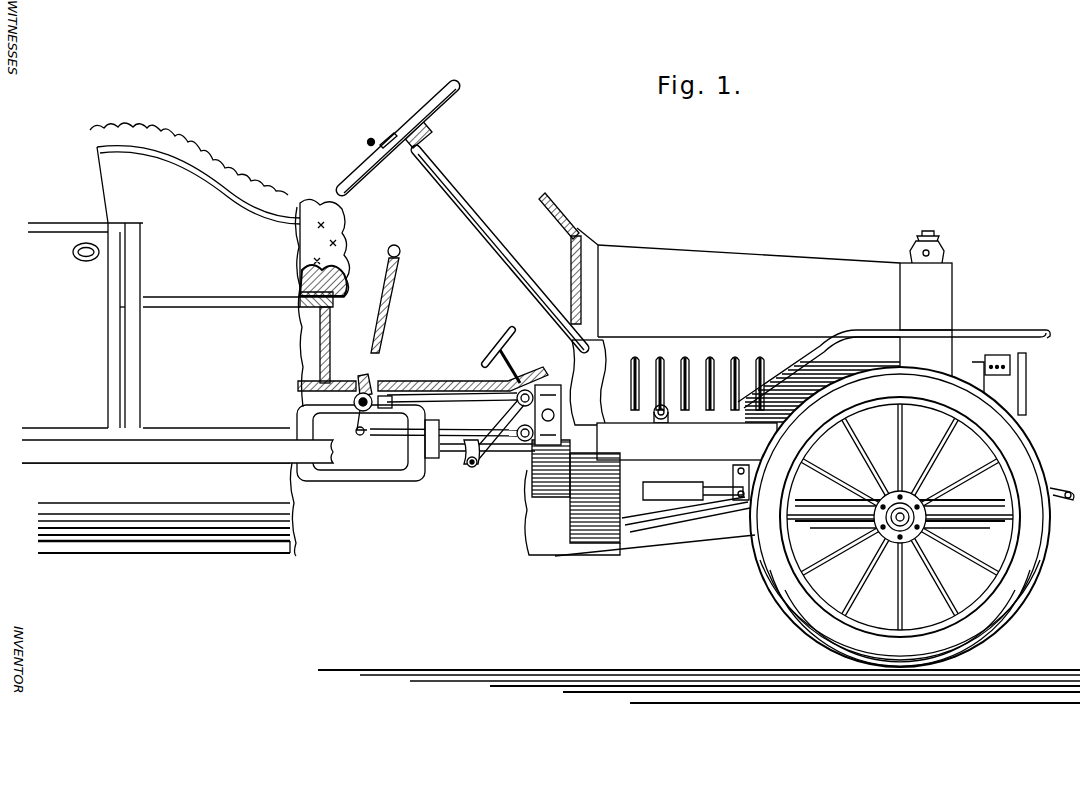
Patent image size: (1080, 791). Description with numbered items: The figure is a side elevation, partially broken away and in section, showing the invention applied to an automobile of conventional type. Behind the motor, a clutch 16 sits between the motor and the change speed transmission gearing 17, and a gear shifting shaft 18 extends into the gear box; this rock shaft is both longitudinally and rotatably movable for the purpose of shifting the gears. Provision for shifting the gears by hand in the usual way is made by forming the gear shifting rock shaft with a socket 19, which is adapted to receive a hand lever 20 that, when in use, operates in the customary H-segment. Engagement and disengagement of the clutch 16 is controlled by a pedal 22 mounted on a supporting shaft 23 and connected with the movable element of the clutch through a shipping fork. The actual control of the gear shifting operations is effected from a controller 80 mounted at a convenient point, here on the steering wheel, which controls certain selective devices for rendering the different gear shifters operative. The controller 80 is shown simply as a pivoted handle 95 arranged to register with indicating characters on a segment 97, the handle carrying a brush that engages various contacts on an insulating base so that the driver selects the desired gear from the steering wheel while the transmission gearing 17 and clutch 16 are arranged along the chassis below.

The clutch 16 is at (543, 497).
The change speed transmission gearing 17 is at (366, 462).
The gear shifting shaft 18 is at (354, 404).
The socket 19 is at (362, 388).
The hand lever 20 is at (380, 292).
The pedal 22 is at (499, 345).
The supporting shaft 23 is at (472, 468).
The controller 80 is at (396, 129).
The pivoted handle 95 is at (369, 140).
The segment 97 is at (415, 125).